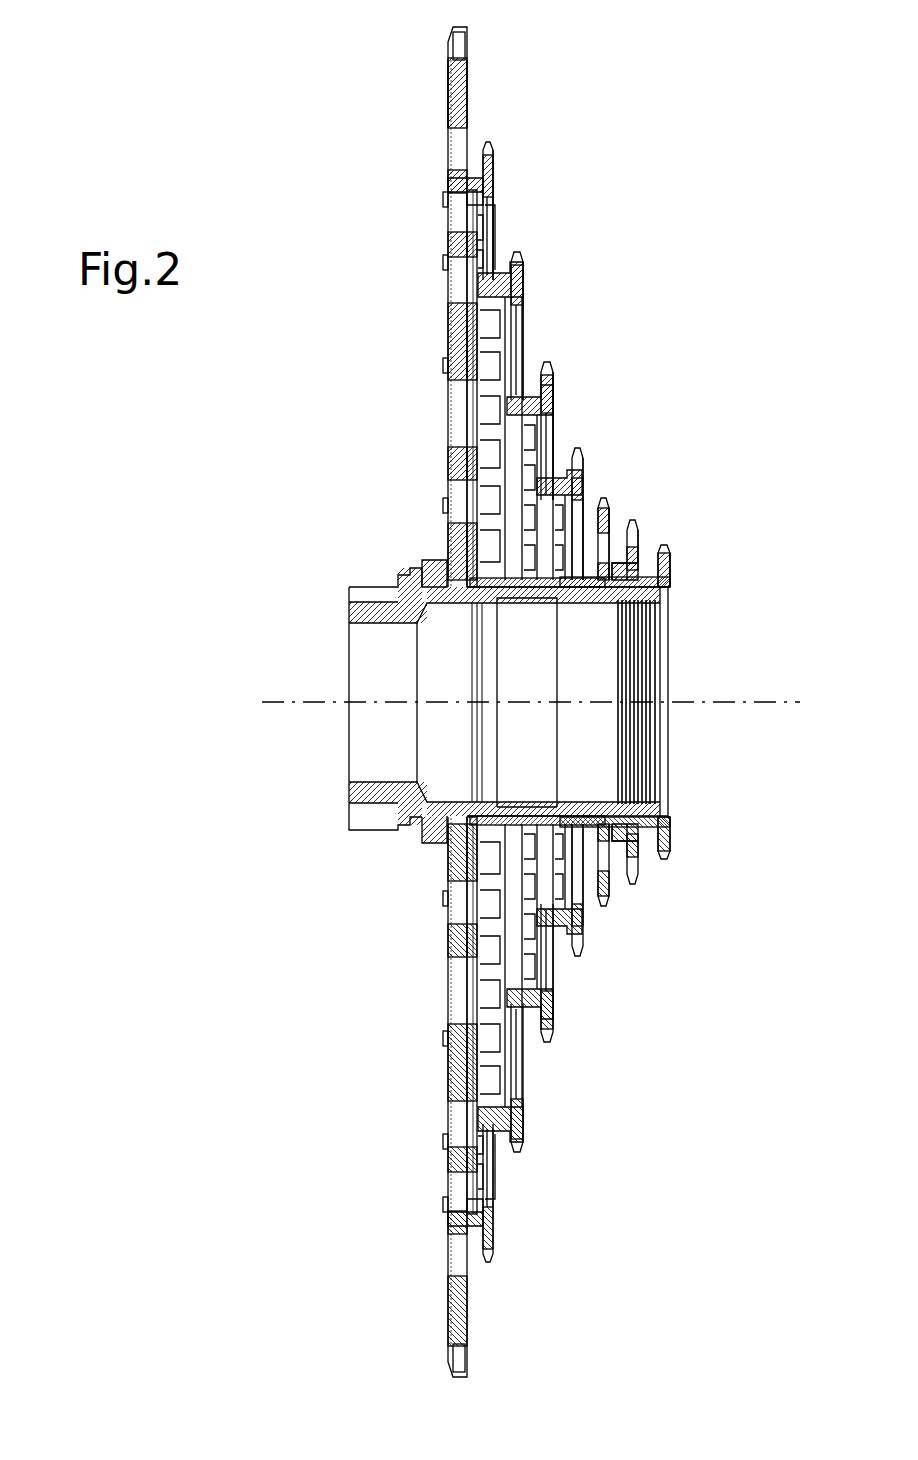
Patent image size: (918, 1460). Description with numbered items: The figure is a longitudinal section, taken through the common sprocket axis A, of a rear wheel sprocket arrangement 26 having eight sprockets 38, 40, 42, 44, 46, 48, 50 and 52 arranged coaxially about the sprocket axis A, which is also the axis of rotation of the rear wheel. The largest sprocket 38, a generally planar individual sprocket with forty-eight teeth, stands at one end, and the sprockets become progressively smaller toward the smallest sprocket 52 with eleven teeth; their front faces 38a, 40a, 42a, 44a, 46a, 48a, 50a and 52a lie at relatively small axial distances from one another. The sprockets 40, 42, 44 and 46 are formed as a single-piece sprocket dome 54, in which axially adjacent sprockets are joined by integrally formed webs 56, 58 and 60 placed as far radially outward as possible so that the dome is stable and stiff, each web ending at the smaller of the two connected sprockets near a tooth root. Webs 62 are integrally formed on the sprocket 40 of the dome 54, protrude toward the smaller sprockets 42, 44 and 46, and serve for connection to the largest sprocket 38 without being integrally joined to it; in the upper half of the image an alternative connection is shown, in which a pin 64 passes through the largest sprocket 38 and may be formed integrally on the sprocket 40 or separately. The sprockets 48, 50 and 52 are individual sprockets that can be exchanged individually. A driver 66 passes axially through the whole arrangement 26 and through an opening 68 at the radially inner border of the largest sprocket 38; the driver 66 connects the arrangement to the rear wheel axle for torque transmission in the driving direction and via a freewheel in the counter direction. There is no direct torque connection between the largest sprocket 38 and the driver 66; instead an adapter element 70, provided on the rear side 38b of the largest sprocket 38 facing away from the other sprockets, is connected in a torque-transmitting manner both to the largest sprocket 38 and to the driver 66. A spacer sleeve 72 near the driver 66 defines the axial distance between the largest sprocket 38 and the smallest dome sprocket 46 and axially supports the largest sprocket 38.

The rear wheel sprocket arrangement 26 is at (318, 105).
The largest sprocket 38 is at (472, 48).
The front face of largest sprocket 38a is at (469, 112).
The rear side of largest sprocket 38b is at (446, 112).
The sprocket 40 is at (500, 179).
The front face of sprocket 40a is at (510, 207).
The sprocket 42 is at (531, 290).
The front face of sprocket 42a is at (540, 317).
The sprocket 44 is at (559, 371).
The front face of sprocket 44a is at (568, 397).
The sprocket 46 is at (590, 452).
The front face of sprocket 46a is at (598, 477).
The sprocket 48 is at (615, 490).
The front face of sprocket 48a is at (625, 524).
The sprocket 50 is at (646, 512).
The front face of sprocket 50a is at (652, 556).
The smallest sprocket 52 is at (677, 540).
The front face of smallest sprocket 52a is at (683, 567).
The sprocket dome 54 is at (648, 362).
The web 56 is at (496, 292).
The web 58 is at (527, 402).
The web 60 is at (555, 488).
The webs 62 is at (445, 365).
The pin 64 is at (456, 186).
The driver 66 is at (353, 612).
The opening 68 is at (442, 660).
The adapter element 70 is at (432, 583).
The spacer sleeve 72 is at (508, 590).
The sprocket axis A is at (296, 699).